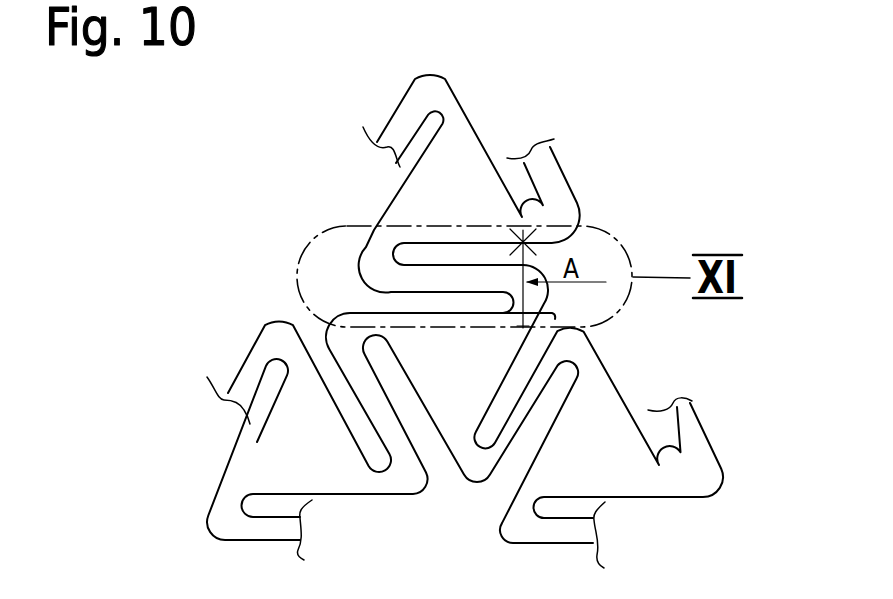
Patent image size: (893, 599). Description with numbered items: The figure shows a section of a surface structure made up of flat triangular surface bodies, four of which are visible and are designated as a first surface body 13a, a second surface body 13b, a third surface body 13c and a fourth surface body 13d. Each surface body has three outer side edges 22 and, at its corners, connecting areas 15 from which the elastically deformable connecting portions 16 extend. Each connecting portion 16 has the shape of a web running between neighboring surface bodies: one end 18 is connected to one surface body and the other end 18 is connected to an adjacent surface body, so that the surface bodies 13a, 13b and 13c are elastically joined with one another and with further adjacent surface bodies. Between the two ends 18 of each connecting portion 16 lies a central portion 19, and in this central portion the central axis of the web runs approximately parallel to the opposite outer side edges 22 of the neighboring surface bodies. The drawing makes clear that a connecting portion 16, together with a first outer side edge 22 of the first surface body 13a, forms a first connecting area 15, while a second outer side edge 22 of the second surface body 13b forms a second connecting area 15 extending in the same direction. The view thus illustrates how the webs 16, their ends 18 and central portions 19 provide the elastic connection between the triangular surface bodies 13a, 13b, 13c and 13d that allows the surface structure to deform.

The first surface body 13a is at (460, 165).
The second surface body 13b is at (437, 382).
The third surface body 13c is at (303, 458).
The fourth surface body 13d is at (612, 432).
The connecting area 15 is at (347, 336).
The connecting portion 16 is at (372, 398).
The end 18 is at (388, 119).
The central portion 19 is at (551, 162).
The outer side edge 22 is at (393, 205).